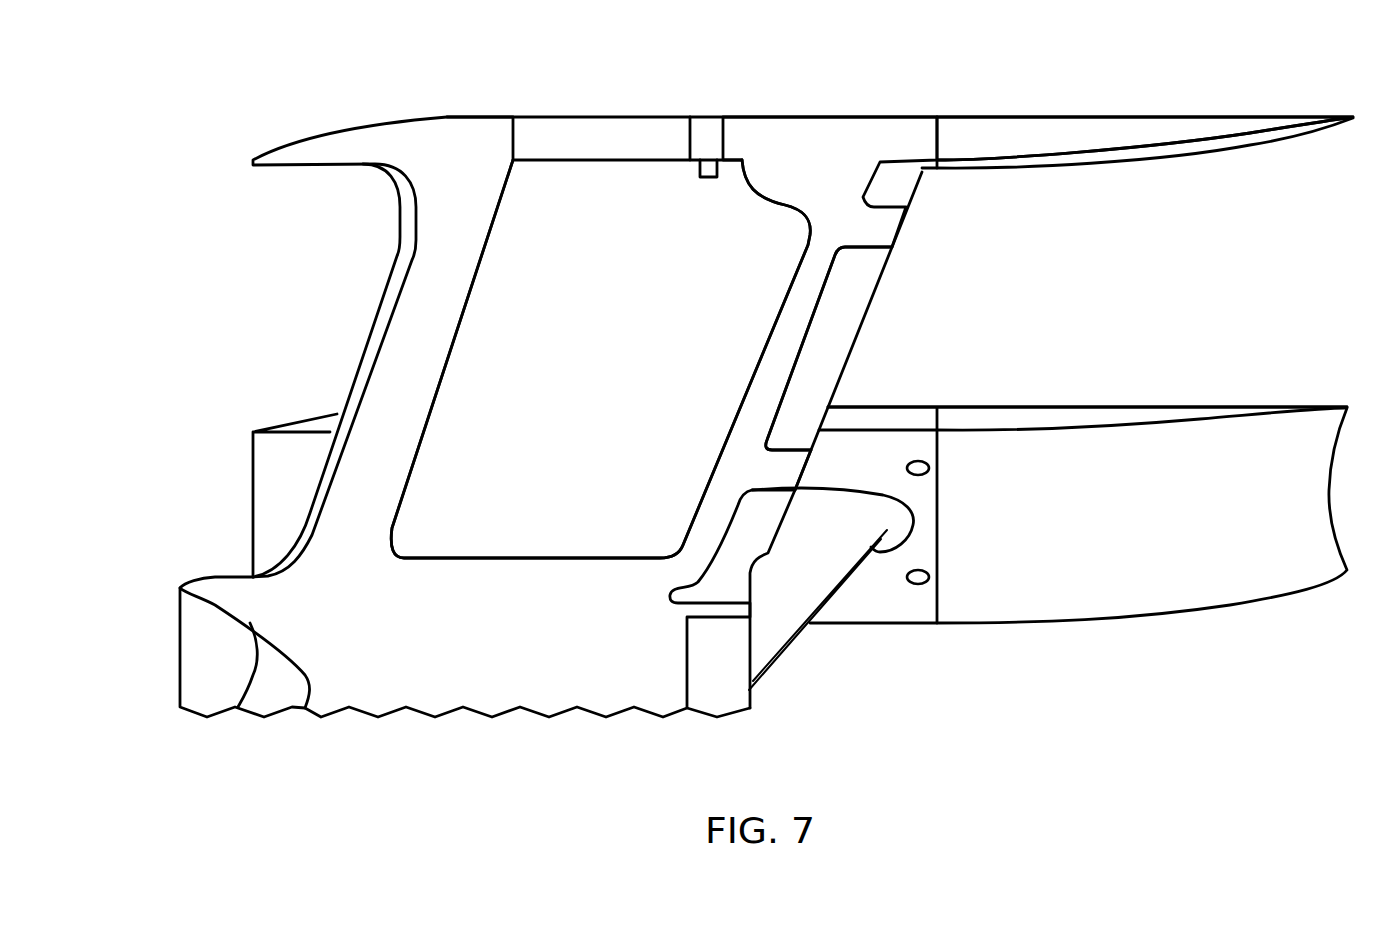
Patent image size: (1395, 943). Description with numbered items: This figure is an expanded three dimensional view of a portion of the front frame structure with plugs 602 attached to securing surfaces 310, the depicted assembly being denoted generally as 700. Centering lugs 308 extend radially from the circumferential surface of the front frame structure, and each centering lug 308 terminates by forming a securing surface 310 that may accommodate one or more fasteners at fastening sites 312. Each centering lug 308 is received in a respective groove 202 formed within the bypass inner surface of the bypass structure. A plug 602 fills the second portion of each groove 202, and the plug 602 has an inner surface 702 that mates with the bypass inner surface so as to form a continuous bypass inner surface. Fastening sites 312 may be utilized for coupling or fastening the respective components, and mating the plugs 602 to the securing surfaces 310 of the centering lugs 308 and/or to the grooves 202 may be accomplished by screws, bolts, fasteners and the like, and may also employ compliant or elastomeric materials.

The turbine assembly 700 is at (206, 302).
The centering lug 308 is at (637, 198).
The securing surface 310 is at (895, 124).
The inner surface 702 is at (1052, 122).
The plug 602 is at (1246, 120).
The groove 202 is at (857, 308).
The fastening site 312 is at (917, 460).